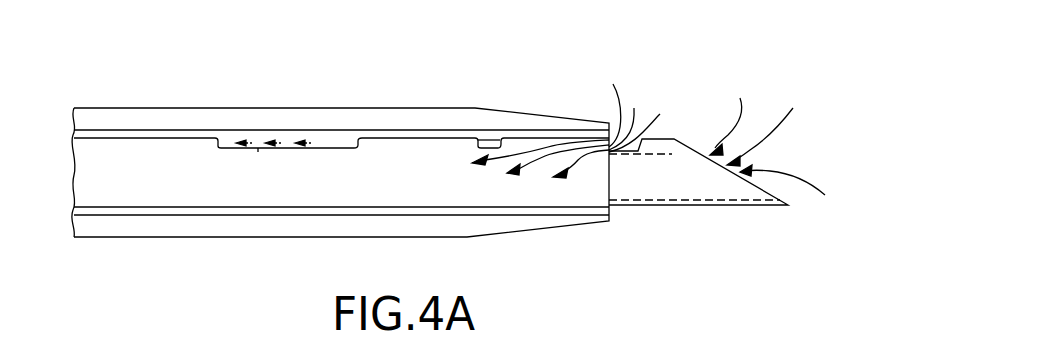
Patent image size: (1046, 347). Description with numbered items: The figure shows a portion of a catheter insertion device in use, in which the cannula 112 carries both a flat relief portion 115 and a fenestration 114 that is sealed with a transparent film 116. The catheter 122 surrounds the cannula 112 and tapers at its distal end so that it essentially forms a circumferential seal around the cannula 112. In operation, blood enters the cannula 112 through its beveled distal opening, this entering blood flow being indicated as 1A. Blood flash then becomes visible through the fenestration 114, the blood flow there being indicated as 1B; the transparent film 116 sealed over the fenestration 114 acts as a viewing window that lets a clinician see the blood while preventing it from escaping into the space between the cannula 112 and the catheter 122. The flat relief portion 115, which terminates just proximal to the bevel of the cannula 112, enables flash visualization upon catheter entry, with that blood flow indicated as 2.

The catheter 122 is at (191, 118).
The blood flow 1B is at (234, 141).
The transparent film 116 is at (345, 138).
The fenestration 114 is at (258, 150).
The flat relief portion 115 is at (500, 137).
The blood flow 2 is at (528, 153).
The cannula 112 is at (677, 180).
The blood flow 1A is at (758, 118).